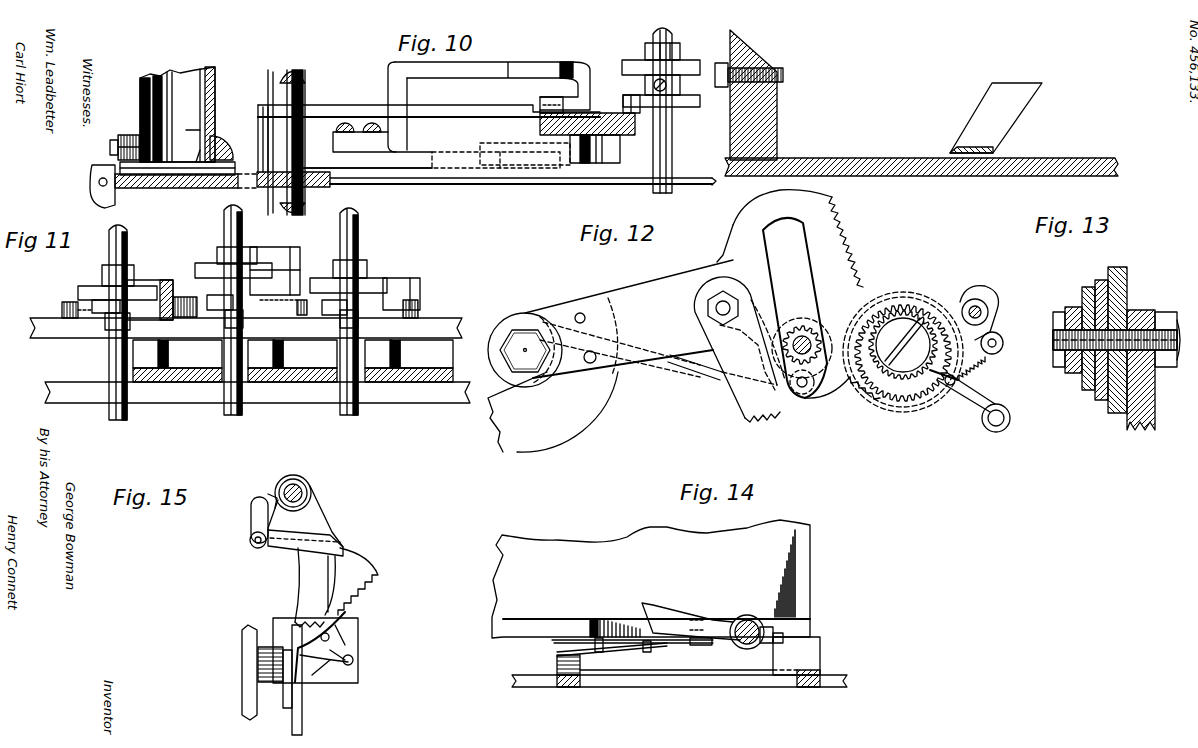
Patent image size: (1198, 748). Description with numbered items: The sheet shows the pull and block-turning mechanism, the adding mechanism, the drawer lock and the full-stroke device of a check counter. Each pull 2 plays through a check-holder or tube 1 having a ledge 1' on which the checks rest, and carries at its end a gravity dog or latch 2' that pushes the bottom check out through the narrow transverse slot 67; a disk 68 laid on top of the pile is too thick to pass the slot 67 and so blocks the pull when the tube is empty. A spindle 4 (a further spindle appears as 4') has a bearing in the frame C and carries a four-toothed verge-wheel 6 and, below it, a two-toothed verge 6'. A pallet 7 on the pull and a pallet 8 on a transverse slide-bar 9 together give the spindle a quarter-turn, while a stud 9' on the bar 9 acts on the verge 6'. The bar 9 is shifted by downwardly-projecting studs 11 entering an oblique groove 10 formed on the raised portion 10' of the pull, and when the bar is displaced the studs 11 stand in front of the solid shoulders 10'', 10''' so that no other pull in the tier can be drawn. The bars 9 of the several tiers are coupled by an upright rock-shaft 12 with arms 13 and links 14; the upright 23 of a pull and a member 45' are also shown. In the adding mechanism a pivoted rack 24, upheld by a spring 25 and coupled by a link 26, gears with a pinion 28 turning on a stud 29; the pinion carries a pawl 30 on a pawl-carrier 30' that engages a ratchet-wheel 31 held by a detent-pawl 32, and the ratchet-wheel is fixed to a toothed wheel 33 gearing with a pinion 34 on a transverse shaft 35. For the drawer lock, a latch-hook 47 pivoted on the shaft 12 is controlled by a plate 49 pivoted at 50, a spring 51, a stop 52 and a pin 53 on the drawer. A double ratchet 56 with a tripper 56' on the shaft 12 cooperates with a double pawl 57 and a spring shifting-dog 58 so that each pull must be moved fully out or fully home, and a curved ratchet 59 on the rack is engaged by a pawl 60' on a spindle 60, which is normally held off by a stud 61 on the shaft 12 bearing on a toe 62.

In FIG. 10, the check-holder 1 is at (171, 114).
In FIG. 10, the ledge 1' is at (187, 158).
In FIG. 10, the pull 2 is at (616, 173).
In FIG. 11, the pull 2 is at (250, 366).
In FIG. 10, the gravity dog or latch 2' is at (106, 190).
In FIG. 10, the spindle 4 is at (672, 110).
In FIG. 11, the shaft 4' is at (241, 312).
In FIG. 10, the verge-wheel 6 is at (666, 70).
In FIG. 11, the verge-wheel 6 is at (231, 273).
In FIG. 10, the verge 6' is at (668, 89).
In FIG. 11, the verge 6' is at (223, 314).
In FIG. 10, the pallet 7 is at (490, 65).
In FIG. 10, the pallet 8 is at (682, 48).
In FIG. 11, the pallet 8 is at (145, 282).
In FIG. 10, the slide-bar 9 is at (523, 157).
In FIG. 10, the stud 9' is at (622, 102).
In FIG. 11, the stud 9' is at (232, 301).
In FIG. 10, the oblique groove 10 is at (430, 142).
In FIG. 10, the raised portion 10' is at (366, 160).
In FIG. 11, the solid shoulders 10'' is at (293, 361).
In FIG. 10, the slide 10''' is at (525, 154).
In FIG. 10, the studs 11 is at (604, 152).
In FIG. 11, the studs 11 is at (266, 354).
In FIG. 10, the upright rock-shaft 12 is at (305, 93).
In FIG. 14, the upright rock-shaft 12 is at (749, 618).
In FIG. 15, the upright rock-shaft 12 is at (306, 496).
In FIG. 10, the arms 13 is at (446, 105).
In FIG. 10, the links 14 is at (551, 97).
In FIG. 10, the upright 23 is at (778, 106).
In FIG. 12, the rack 24 is at (798, 294).
In FIG. 15, the rack 24 is at (302, 720).
In FIG. 12, the spring 25 is at (688, 366).
In FIG. 15, the spring 25 is at (283, 700).
In FIG. 12, the link 26 is at (745, 410).
In FIG. 12, the pinion 28 is at (893, 316).
In FIG. 13, the pinion 28 is at (1068, 307).
In FIG. 13, the stud 29 is at (1140, 318).
In FIG. 12, the pawl 30 is at (990, 333).
In FIG. 12, the pawl-carrier 30' is at (928, 380).
In FIG. 13, the pawl-carrier 30' is at (1081, 324).
In FIG. 12, the ratchet-wheel 31 is at (935, 290).
In FIG. 13, the ratchet-wheel 31 is at (1100, 400).
In FIG. 12, the detent-pawl 32 is at (948, 394).
In FIG. 12, the toothed wheel 33 is at (900, 280).
In FIG. 13, the toothed wheel 33 is at (1118, 267).
In FIG. 12, the pinion 34 is at (805, 326).
In FIG. 12, the shaft 35 is at (785, 325).
In FIG. 10, the blade 45' is at (996, 118).
In FIG. 14, the latch-hook 47 is at (672, 617).
In FIG. 14, the plate 49 is at (666, 645).
In FIG. 14, the pivot 50 is at (790, 637).
In FIG. 14, the spring 51 is at (590, 655).
In FIG. 14, the stop 52 is at (700, 644).
In FIG. 14, the pin 53 is at (604, 628).
In FIG. 15, the double ratchet 56 is at (370, 581).
In FIG. 15, the tripper 56' is at (345, 643).
In FIG. 15, the double pawl 57 is at (350, 632).
In FIG. 15, the shifting-dog 58 is at (318, 677).
In FIG. 12, the curved ratchet 59 is at (610, 356).
In FIG. 15, the curved ratchet 59 is at (329, 588).
In FIG. 15, the spindle 60 is at (251, 551).
In FIG. 15, the pawl 60' is at (319, 521).
In FIG. 15, the stud 61 is at (270, 495).
In FIG. 15, the toe 62 is at (251, 513).
In FIG. 10, the slot 67 is at (198, 158).
In FIG. 10, the disk 68 is at (205, 128).
In FIG. 14, the frame C is at (700, 687).
In FIG. 15, the frame C is at (243, 652).